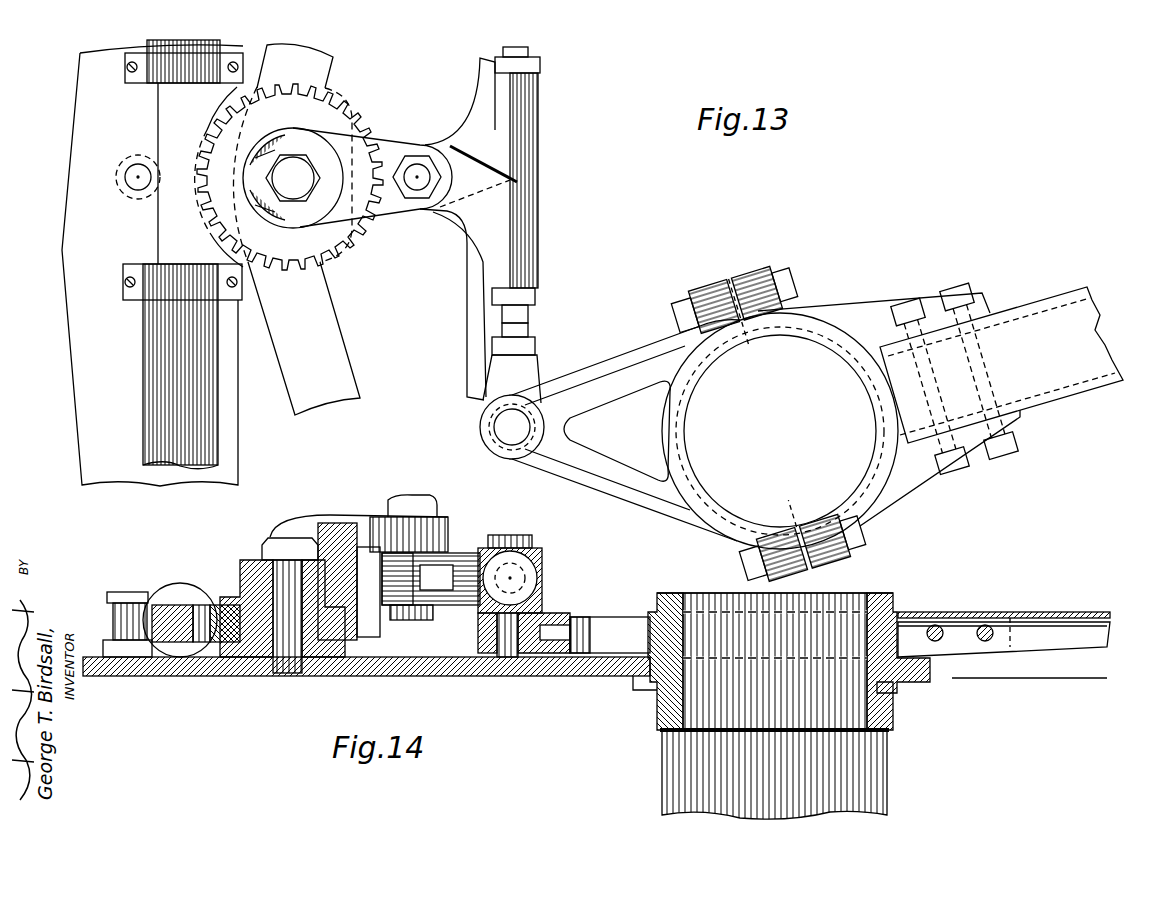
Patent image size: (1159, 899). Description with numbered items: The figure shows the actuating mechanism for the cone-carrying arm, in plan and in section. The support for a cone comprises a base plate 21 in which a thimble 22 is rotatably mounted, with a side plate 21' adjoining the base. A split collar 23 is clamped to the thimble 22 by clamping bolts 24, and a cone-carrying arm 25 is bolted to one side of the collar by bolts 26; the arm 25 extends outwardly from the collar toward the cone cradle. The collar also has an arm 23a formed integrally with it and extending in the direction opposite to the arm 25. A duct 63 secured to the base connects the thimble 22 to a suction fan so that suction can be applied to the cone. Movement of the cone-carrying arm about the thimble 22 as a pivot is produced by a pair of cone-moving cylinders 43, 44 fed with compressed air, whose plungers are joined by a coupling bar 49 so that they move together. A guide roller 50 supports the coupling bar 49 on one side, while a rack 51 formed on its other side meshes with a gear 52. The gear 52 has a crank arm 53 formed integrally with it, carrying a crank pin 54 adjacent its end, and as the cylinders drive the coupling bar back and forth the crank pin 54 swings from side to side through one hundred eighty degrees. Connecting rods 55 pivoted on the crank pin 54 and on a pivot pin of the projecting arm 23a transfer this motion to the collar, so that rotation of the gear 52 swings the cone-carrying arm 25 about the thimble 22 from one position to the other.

In FIG. 13, the base plate 21 is at (310, 229).
In FIG. 14, the base plate 21 is at (370, 686).
In FIG. 13, the side plate 21' is at (128, 265).
In FIG. 13, the thimble 22 is at (886, 482).
In FIG. 14, the thimble 22 is at (897, 600).
In FIG. 13, the split collar 23 is at (835, 312).
In FIG. 14, the split collar 23 is at (955, 617).
In FIG. 13, the arm 23a is at (630, 370).
In FIG. 14, the arm 23a is at (628, 604).
In FIG. 13, the clamping bolts 24 is at (775, 275).
In FIG. 13, the cone-carrying arm 25 is at (1050, 396).
In FIG. 14, the cone-carrying arm 25 is at (1060, 630).
In FIG. 13, the bolts 26 is at (955, 288).
In FIG. 14, the bolts 26 is at (985, 641).
In FIG. 13, the cone-moving cylinder 43 is at (150, 376).
In FIG. 13, the cone-moving cylinder 44 is at (160, 84).
In FIG. 14, the cone-moving cylinder 44 is at (182, 584).
In FIG. 13, the coupling bar 49 is at (158, 218).
In FIG. 14, the coupling bar 49 is at (182, 622).
In FIG. 13, the guide roller 50 is at (118, 170).
In FIG. 14, the guide roller 50 is at (125, 600).
In FIG. 13, the rack 51 is at (200, 140).
In FIG. 14, the rack 51 is at (208, 626).
In FIG. 13, the gear 52 is at (312, 92).
In FIG. 13, the crank arm 53 is at (375, 152).
In FIG. 14, the crank arm 53 is at (364, 527).
In FIG. 13, the crank pin 54 is at (419, 172).
In FIG. 14, the crank pin 54 is at (420, 495).
In FIG. 13, the connecting rods 55 is at (528, 52).
In FIG. 14, the connecting rods 55 is at (542, 558).
In FIG. 13, the duct 63 is at (780, 431).
In FIG. 14, the duct 63 is at (682, 748).